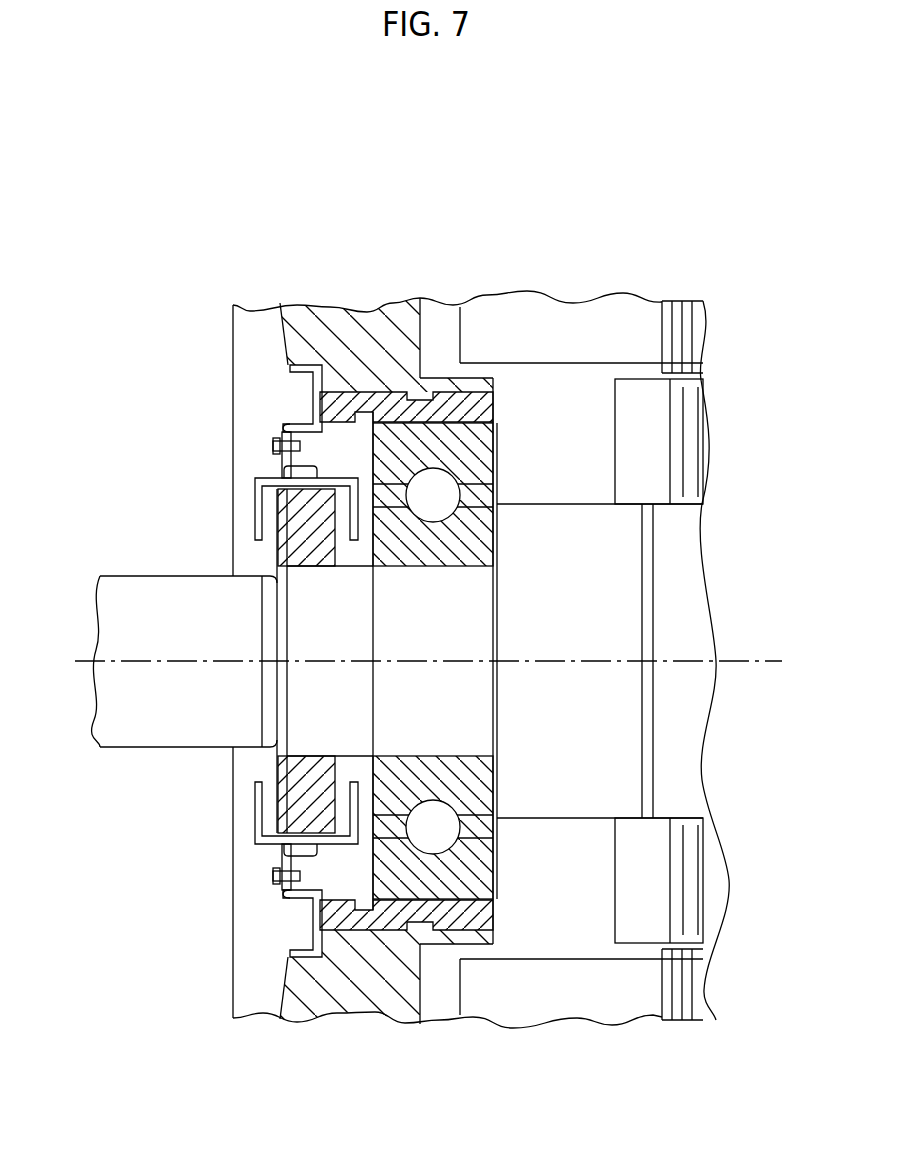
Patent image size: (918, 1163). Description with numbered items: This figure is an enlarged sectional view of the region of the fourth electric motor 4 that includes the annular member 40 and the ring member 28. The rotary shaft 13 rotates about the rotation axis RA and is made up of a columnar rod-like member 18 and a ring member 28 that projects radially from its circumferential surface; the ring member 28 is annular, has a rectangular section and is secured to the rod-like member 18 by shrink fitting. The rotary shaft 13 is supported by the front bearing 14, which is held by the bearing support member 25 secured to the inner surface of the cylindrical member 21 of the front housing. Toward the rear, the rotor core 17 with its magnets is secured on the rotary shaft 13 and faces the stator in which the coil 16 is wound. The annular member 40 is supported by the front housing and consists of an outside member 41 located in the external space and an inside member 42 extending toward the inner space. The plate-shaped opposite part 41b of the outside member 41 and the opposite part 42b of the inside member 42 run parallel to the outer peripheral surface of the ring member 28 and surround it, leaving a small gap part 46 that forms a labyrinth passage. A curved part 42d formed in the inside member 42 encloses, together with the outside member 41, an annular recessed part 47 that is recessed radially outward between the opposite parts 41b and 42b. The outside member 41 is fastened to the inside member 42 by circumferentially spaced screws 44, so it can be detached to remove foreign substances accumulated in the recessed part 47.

The fourth electric motor 4 is at (739, 209).
The rotary shaft 13 is at (678, 715).
The front bearing 14 is at (447, 455).
The coil 16 is at (617, 335).
The rotor core 17 is at (693, 418).
The rod-like member 18 is at (137, 718).
The cylindrical member 21 is at (365, 348).
The bearing support member 25 is at (447, 410).
The ring member 28 is at (300, 545).
The annular member 40 is at (303, 352).
The outside member 41 is at (258, 528).
The opposite part 41b is at (278, 466).
The inside member 42 is at (292, 373).
The opposite part 42b is at (283, 500).
The curved part 42d is at (278, 458).
The screws 44 is at (278, 444).
The gap part 46 is at (280, 818).
The recessed part 47 is at (313, 466).
The rotation axis RA is at (780, 660).